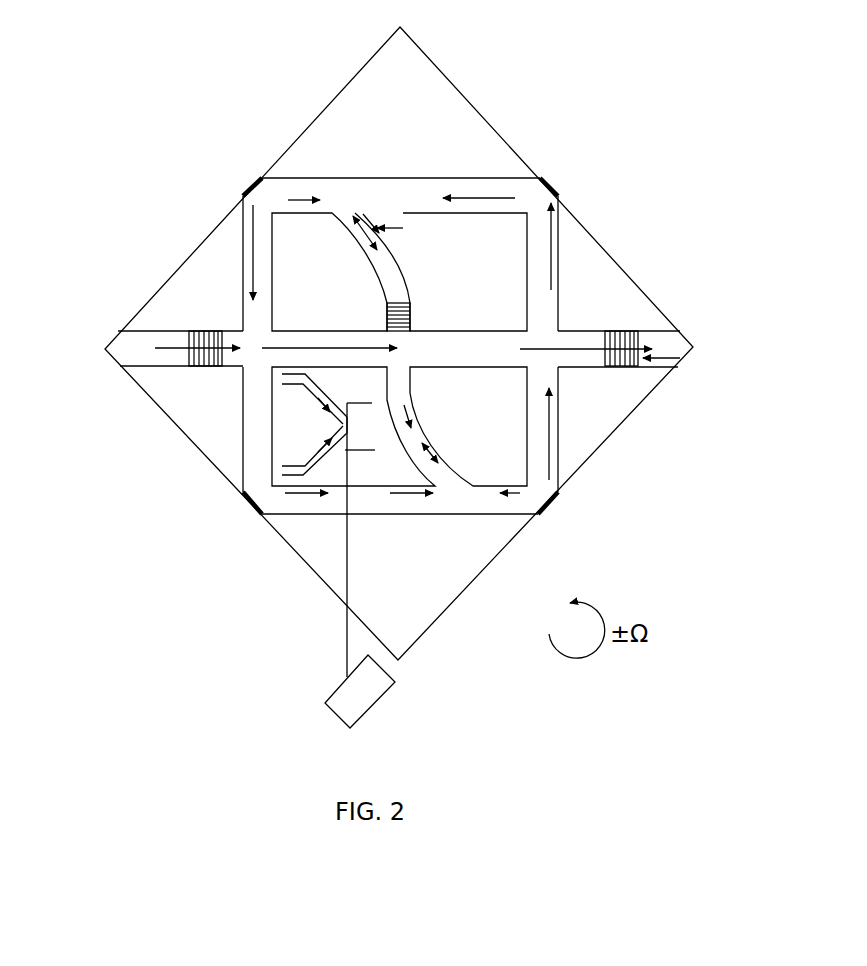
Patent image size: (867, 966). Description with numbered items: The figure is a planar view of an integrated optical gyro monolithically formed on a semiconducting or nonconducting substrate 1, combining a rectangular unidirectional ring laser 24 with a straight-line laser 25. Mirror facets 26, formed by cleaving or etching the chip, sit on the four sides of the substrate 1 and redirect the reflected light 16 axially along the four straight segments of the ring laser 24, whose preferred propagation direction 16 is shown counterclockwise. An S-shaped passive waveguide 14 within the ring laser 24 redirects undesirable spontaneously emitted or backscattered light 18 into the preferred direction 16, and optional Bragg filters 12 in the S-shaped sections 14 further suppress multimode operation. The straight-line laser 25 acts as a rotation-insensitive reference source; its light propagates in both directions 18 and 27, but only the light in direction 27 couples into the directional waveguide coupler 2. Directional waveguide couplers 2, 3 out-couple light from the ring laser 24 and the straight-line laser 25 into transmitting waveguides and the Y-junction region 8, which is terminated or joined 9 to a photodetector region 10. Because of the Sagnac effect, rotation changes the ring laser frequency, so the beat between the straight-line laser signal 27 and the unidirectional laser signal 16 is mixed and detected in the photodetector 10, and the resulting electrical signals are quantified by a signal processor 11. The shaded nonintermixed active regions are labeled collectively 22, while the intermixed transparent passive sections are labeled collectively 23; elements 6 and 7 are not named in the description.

The substrate 1 is at (351, 88).
The directional waveguide coupler 2 is at (314, 395).
The directional waveguide coupler 3 is at (314, 454).
The second inlet channel 6 is at (312, 446).
The first inlet channel 7 is at (312, 405).
The Y-junction region 8 is at (342, 398).
The junction to photodetector 9 is at (365, 440).
The photodetector region 10 is at (391, 398).
The signal processor 11 is at (372, 706).
The Bragg filter 12 is at (207, 330).
The S-shaped passive waveguide 14 is at (410, 285).
The preferred light propagation direction 16 is at (459, 195).
The unwanted light direction 18 is at (298, 207).
The nonintermixed regions 22 is at (401, 176).
The intermixed transparent sections 23 is at (416, 425).
The unidirectional ring laser 24 is at (284, 176).
The straight-line laser 25 is at (163, 329).
The mirror facet 26 is at (248, 186).
The straight-line laser signal direction 27 is at (186, 344).